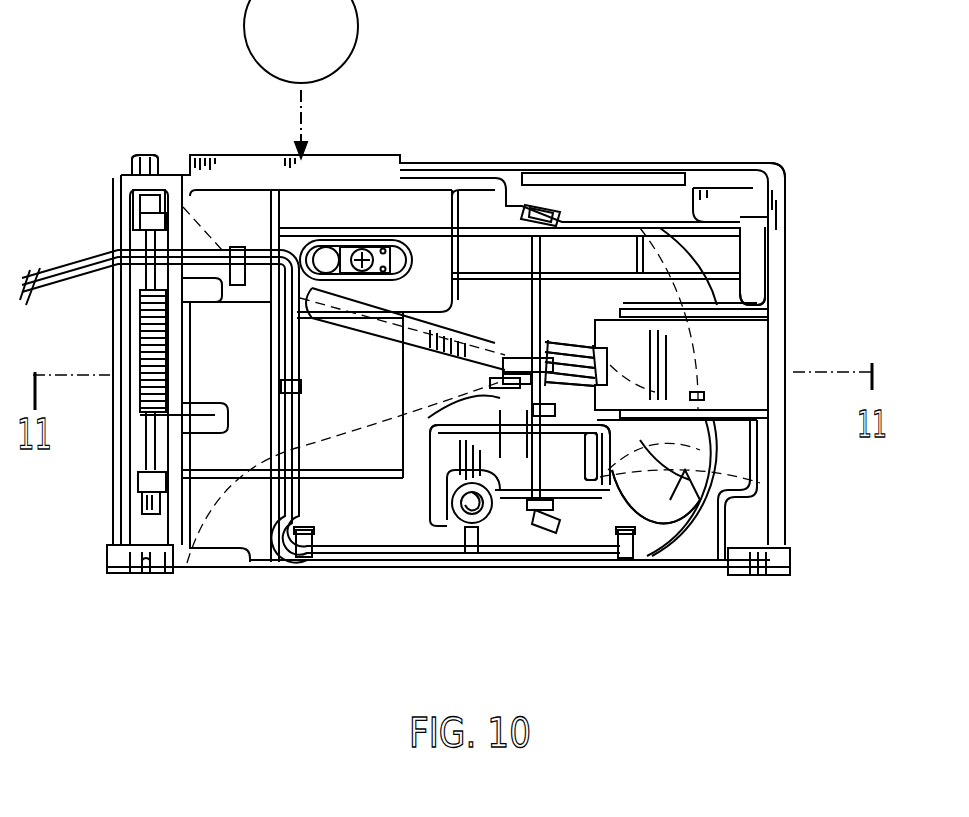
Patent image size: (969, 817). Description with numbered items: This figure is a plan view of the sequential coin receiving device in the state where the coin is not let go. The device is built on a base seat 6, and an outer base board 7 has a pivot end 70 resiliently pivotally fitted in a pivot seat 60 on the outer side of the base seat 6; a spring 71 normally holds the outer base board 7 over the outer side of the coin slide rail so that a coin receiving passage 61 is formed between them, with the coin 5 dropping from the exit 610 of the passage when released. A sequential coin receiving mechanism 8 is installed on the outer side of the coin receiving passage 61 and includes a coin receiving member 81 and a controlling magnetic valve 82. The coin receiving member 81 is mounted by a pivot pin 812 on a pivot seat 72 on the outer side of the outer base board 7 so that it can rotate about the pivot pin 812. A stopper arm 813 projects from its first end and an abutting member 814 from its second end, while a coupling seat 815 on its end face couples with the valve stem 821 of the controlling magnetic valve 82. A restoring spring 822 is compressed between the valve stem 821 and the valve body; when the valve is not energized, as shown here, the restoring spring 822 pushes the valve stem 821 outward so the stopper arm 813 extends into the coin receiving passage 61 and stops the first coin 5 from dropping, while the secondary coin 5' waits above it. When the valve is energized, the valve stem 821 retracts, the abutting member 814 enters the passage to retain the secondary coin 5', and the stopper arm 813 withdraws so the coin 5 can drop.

The coin 5 is at (368, 349).
The secondary coin 5' is at (726, 507).
The base seat 6 is at (745, 172).
The outer base board 7 is at (760, 268).
The sequential coin receiving mechanism 8 is at (745, 338).
The controlling magnetic valve 82 is at (733, 352).
The coin receiving passage 61 is at (703, 395).
The valve stem 821 is at (503, 340).
The restoring spring 822 is at (575, 335).
The coupling seat 815 is at (503, 383).
The pivot seat 60 is at (133, 197).
The pivot end 70 is at (140, 218).
The spring 71 is at (130, 312).
The exit 610 is at (233, 567).
The stopper arm 813 is at (404, 565).
The pivot seat 72 is at (520, 553).
The pivot pin 812 is at (557, 555).
The abutting member 814 is at (583, 540).
The coin receiving member 81 is at (630, 560).